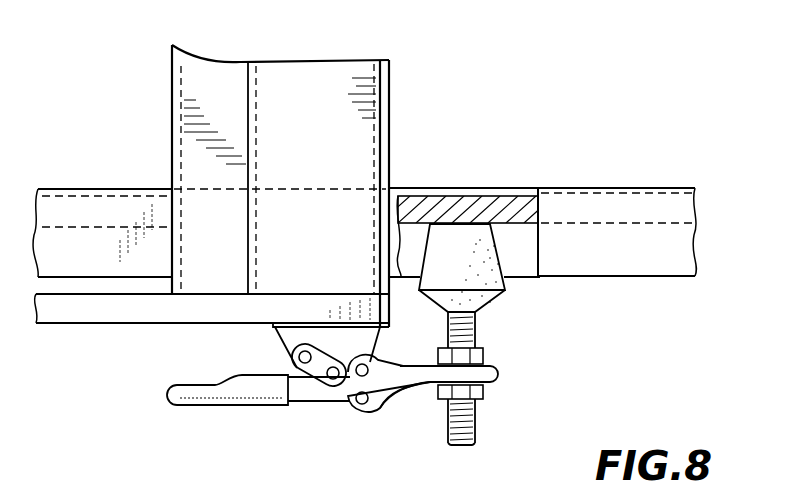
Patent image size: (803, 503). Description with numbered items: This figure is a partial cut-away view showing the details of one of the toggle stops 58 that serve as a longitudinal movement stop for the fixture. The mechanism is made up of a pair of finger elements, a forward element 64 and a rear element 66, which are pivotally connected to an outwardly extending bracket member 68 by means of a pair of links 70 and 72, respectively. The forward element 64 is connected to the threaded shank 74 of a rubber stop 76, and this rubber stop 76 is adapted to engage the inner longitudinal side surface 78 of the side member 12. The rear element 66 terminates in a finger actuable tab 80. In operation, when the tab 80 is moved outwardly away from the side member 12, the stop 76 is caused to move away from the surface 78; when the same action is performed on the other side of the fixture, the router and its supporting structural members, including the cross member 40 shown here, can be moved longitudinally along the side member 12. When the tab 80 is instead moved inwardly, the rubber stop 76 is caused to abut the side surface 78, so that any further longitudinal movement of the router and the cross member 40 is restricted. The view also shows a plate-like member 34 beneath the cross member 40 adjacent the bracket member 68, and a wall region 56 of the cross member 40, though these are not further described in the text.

The side member 12 is at (670, 244).
The plate 34 is at (104, 313).
The cross member 40 is at (377, 120).
The column wall 56 is at (173, 118).
The toggle stop 58 is at (430, 406).
The forward finger element 64 is at (498, 372).
The rear finger element 66 is at (302, 392).
The bracket member 68 is at (290, 340).
The link 70 is at (368, 410).
The link 72 is at (320, 355).
The threaded shank 74 is at (477, 418).
The rubber stop 76 is at (492, 300).
The inner longitudinal side surface 78 is at (529, 226).
The finger actuable tab 80 is at (215, 405).